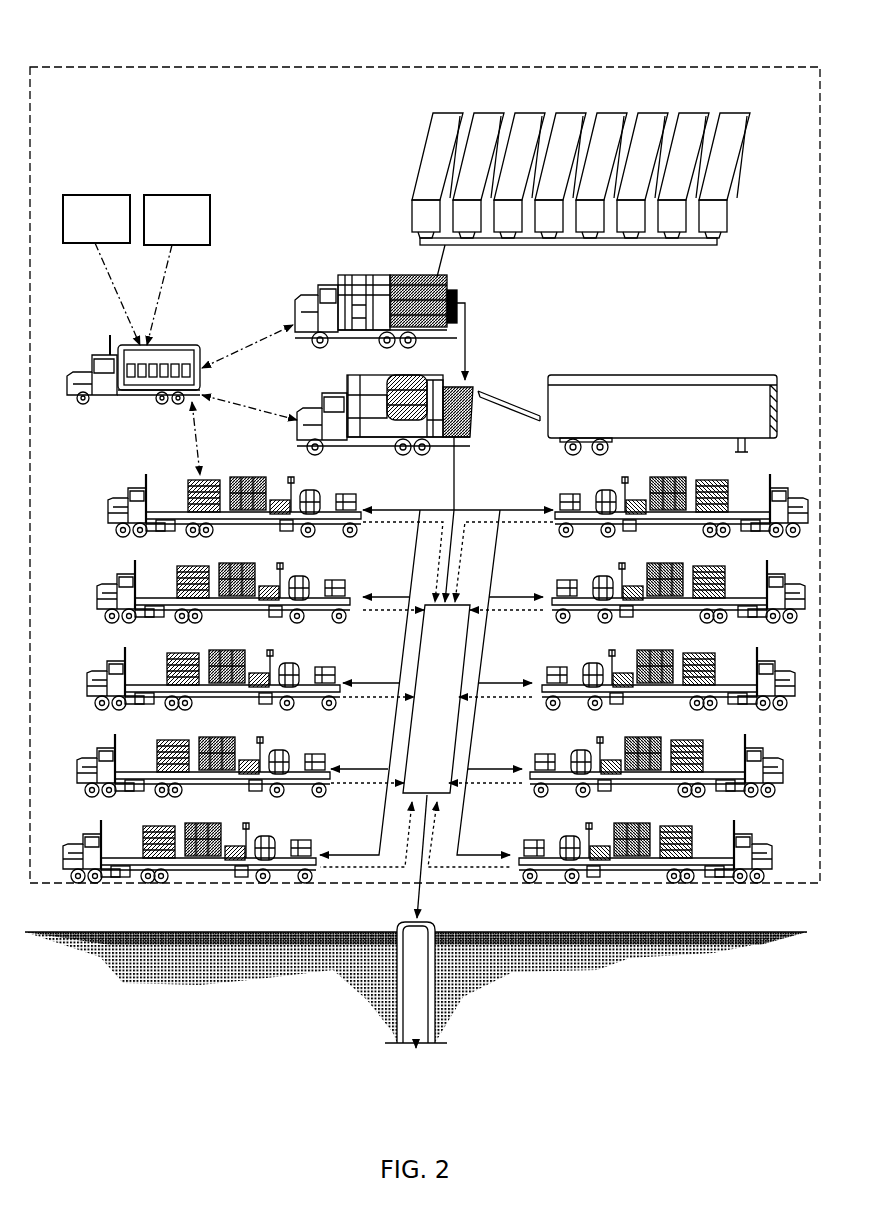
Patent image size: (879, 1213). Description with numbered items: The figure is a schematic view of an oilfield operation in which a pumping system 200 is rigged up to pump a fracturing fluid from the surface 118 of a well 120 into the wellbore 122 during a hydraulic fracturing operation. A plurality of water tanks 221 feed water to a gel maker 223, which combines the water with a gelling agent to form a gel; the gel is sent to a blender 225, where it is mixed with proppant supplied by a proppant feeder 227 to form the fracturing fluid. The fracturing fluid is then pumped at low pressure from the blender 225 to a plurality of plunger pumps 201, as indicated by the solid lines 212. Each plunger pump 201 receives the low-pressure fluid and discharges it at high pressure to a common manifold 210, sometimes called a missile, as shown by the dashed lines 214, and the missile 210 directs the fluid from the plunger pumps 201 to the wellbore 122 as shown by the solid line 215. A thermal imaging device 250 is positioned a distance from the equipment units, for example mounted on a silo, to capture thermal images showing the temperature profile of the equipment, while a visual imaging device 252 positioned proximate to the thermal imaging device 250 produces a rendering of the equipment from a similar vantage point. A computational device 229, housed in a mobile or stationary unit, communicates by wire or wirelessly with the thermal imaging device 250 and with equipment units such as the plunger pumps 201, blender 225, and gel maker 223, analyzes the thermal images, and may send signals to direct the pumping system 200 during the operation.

The pumping system 200 is at (656, 45).
The plunger pumps 201 is at (102, 505).
The common manifold 210 is at (430, 663).
The solid lines 212 is at (455, 487).
The dashed lines 214 is at (415, 525).
The solid line 215 is at (415, 893).
The water tanks 221 is at (455, 118).
The gel maker 223 is at (462, 298).
The blender 225 is at (345, 385).
The proppant feeder 227 is at (647, 374).
The computational device 229 is at (160, 344).
The thermal imaging device 250 is at (101, 270).
The visual imaging device 252 is at (177, 270).
The surface 118 is at (180, 931).
The well 120 is at (435, 998).
The wellbore 122 is at (412, 1005).